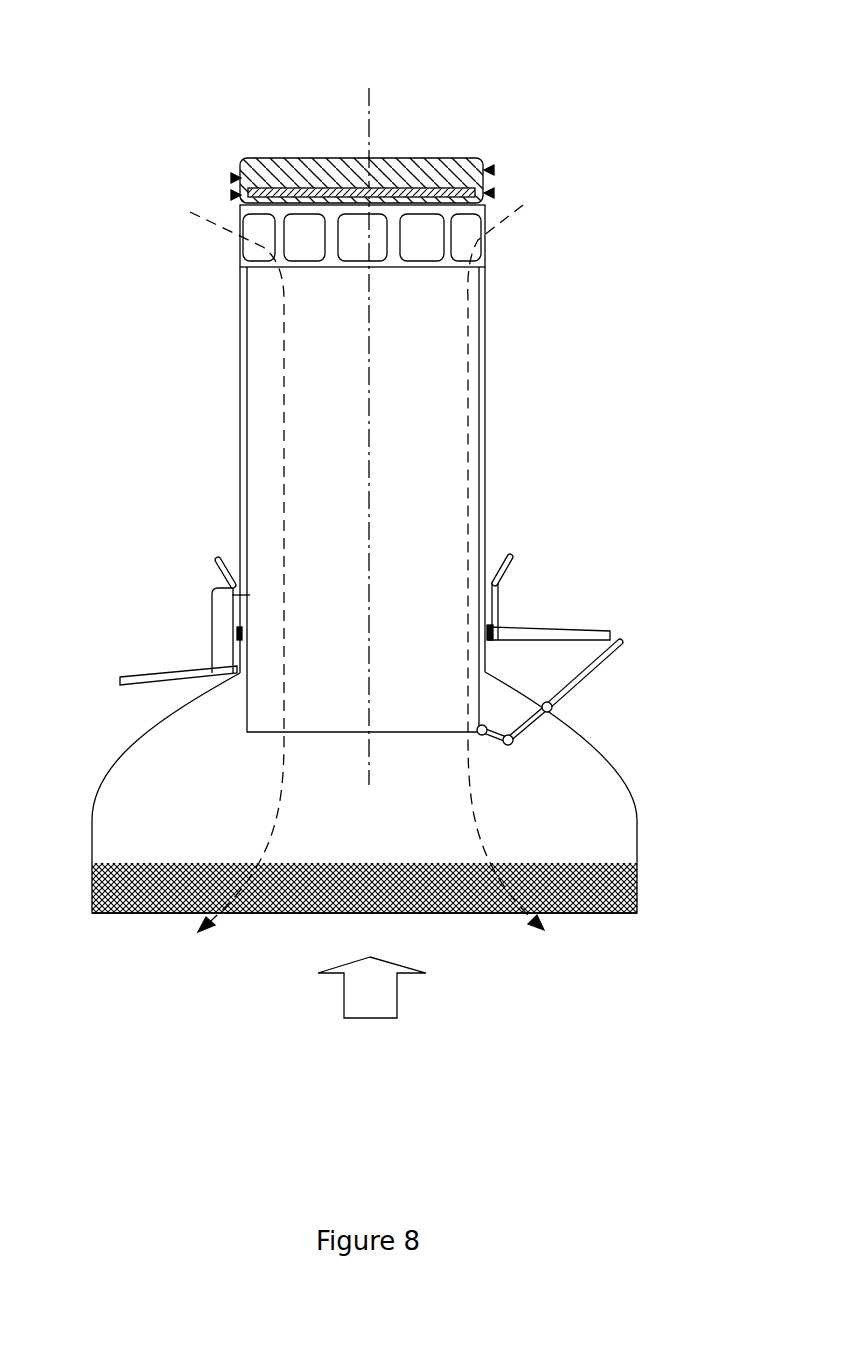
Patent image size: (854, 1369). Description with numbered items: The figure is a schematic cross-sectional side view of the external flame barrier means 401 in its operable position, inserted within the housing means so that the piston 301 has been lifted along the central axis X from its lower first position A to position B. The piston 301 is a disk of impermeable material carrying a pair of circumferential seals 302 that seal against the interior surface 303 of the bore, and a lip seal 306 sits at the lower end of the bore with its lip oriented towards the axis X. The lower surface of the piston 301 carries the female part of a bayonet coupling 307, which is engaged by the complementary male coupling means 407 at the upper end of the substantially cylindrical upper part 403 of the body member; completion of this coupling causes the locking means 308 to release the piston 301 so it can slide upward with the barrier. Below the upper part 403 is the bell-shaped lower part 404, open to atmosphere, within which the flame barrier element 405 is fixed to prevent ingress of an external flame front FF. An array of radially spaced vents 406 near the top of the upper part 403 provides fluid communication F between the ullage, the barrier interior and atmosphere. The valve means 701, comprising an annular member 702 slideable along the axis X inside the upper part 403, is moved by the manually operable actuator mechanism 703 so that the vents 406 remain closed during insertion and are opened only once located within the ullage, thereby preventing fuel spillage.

The piston 301 is at (458, 167).
The circumferential seals 302 is at (494, 193).
The interior surface 303 is at (268, 497).
The lip seal 306 is at (490, 632).
The female part of a bayonet coupling 307 is at (326, 135).
The male coupling means 407 is at (263, 200).
The locking means 308 is at (222, 643).
The external flame barrier means 401 is at (668, 882).
The upper part 403 is at (240, 392).
The lower part 404 is at (607, 752).
The flame barrier element 405 is at (287, 883).
The vents 406 is at (428, 215).
The valve means 701 is at (327, 297).
The annular member 702 is at (486, 393).
The actuator mechanism 703 is at (573, 687).
The first position A is at (236, 597).
The position B is at (231, 178).
The fluid flow or communication F is at (366, 196).
The external flame front FF is at (372, 987).
The central axis X is at (368, 421).